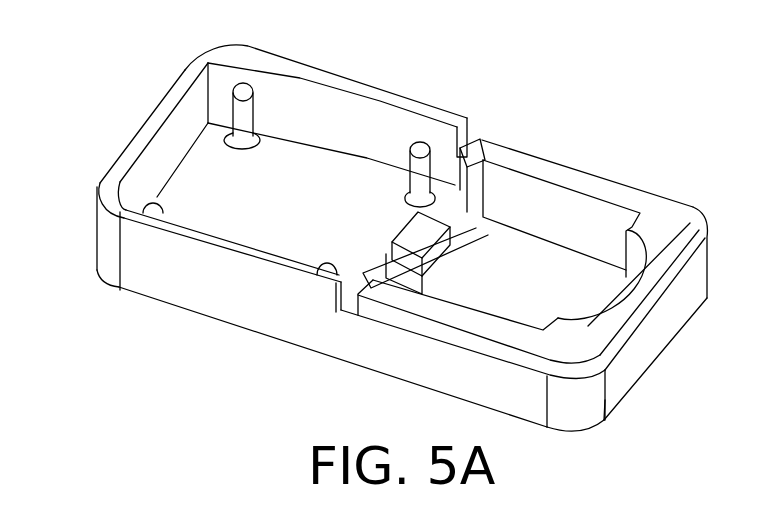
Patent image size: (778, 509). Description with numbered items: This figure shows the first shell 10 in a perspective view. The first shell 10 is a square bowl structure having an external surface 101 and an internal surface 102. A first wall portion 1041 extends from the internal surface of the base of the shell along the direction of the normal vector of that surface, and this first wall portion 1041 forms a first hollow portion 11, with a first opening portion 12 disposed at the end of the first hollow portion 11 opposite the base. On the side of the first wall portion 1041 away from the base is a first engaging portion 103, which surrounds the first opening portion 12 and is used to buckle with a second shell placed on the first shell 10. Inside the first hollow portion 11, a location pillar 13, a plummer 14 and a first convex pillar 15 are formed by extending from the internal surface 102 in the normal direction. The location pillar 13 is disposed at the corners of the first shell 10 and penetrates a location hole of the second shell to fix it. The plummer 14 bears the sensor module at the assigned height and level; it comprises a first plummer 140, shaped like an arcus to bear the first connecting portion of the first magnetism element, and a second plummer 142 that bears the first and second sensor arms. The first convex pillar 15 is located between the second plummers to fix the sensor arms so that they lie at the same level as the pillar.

The first shell 10 is at (373, 220).
The external surface 101 is at (108, 270).
The internal surface 102 is at (198, 160).
The first engaging portion 103 is at (607, 347).
The first wall portion 1041 is at (373, 110).
The first hollow portion 11 is at (300, 118).
The first opening portion 12 is at (245, 233).
The location pillar 13 is at (241, 92).
The plummer 14 is at (703, 190).
The first plummer 140 is at (628, 275).
The second plummer 142 is at (441, 217).
The first convex pillar 15 is at (420, 233).